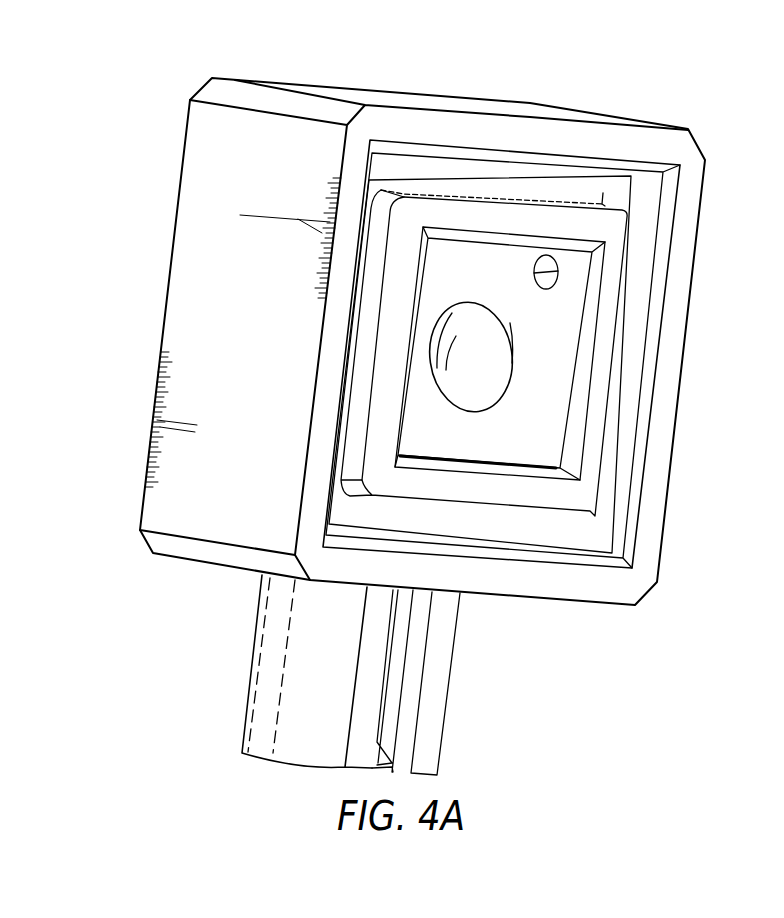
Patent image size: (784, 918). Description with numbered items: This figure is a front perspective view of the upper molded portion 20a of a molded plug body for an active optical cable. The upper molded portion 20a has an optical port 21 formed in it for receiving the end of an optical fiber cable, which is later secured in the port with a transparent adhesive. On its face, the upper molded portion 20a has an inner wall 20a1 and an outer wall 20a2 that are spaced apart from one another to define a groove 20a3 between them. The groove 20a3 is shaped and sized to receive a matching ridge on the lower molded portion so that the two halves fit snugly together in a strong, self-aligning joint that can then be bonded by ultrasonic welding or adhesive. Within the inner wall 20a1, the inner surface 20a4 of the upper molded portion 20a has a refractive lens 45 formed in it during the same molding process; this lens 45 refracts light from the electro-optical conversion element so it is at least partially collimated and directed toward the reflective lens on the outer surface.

The upper molded portion 20a is at (575, 117).
The inner wall 20a1 is at (608, 293).
The outer wall 20a2 is at (668, 360).
The groove 20a3 is at (440, 170).
The inner surface 20a4 is at (528, 452).
The refractive lens 45 is at (480, 400).
The optical port 21 is at (270, 662).